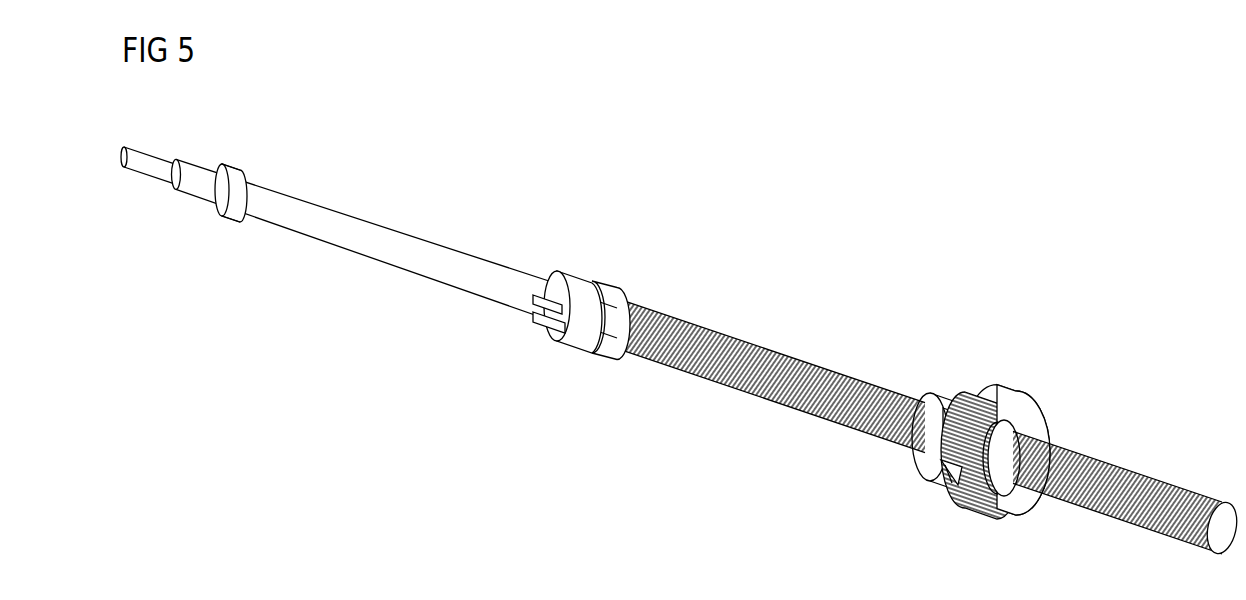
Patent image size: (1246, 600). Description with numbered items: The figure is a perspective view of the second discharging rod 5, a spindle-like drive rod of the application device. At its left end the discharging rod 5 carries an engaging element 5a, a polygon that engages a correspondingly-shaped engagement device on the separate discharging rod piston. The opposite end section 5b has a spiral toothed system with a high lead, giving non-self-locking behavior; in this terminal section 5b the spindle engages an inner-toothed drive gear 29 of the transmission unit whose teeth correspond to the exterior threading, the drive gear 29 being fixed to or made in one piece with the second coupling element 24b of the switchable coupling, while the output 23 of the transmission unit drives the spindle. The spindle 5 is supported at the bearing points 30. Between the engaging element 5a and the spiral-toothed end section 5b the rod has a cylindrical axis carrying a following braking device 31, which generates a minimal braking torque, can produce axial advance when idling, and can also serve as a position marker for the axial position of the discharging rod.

The second discharging rod 5 is at (955, 283).
The engaging element 5a is at (168, 138).
The end section 5b is at (1104, 460).
The output 23 is at (1050, 400).
The second coupling element 24b is at (940, 481).
The inner-toothed drive gear 29 is at (931, 473).
The bearing points 30 is at (232, 170).
The braking device 31 is at (606, 265).